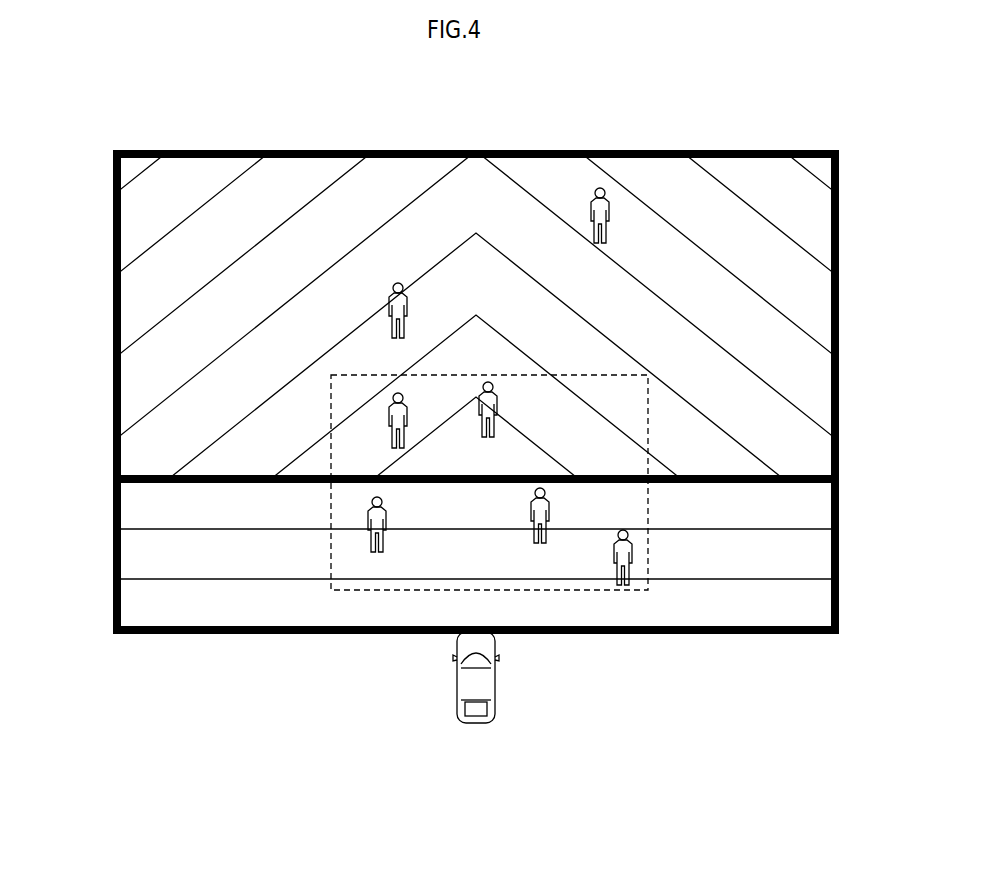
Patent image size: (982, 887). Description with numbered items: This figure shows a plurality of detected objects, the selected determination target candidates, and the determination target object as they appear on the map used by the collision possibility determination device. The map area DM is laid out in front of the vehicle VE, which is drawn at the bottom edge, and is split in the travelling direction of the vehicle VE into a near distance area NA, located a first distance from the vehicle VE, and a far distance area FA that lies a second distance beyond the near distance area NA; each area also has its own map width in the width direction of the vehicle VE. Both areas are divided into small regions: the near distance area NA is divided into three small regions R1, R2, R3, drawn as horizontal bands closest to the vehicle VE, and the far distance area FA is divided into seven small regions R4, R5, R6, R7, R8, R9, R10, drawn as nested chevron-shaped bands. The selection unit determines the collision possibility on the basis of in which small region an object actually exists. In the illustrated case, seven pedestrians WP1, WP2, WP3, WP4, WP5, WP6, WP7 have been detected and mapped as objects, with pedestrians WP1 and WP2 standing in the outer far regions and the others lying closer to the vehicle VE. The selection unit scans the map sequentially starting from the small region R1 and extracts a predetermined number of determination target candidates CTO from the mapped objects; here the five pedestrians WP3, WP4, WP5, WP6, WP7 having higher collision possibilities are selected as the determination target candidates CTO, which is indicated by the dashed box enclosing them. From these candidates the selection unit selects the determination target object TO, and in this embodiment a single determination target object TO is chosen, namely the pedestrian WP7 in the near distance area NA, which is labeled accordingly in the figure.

The detection map DM is at (172, 152).
The far distance area FA is at (843, 154).
The near distance area NA is at (843, 480).
The determination target candidates CTO is at (331, 590).
The small region R1 is at (473, 603).
The small region R2 is at (473, 553).
The small region R3 is at (473, 504).
The small region R4 is at (473, 443).
The small region R5 is at (473, 363).
The small region R6 is at (473, 279).
The small region R7 is at (473, 198).
The small region R8 is at (790, 361).
The small region R9 is at (790, 279).
The small region R10 is at (791, 198).
The pedestrian WP1 is at (398, 280).
The pedestrian WP2 is at (600, 185).
The pedestrian WP3 is at (479, 393).
The pedestrian WP4 is at (389, 420).
The pedestrian WP5 is at (540, 544).
The pedestrian WP6 is at (376, 553).
The pedestrian WP7 is at (623, 586).
The determination target object TO is at (637, 761).
The vehicle VE is at (475, 714).